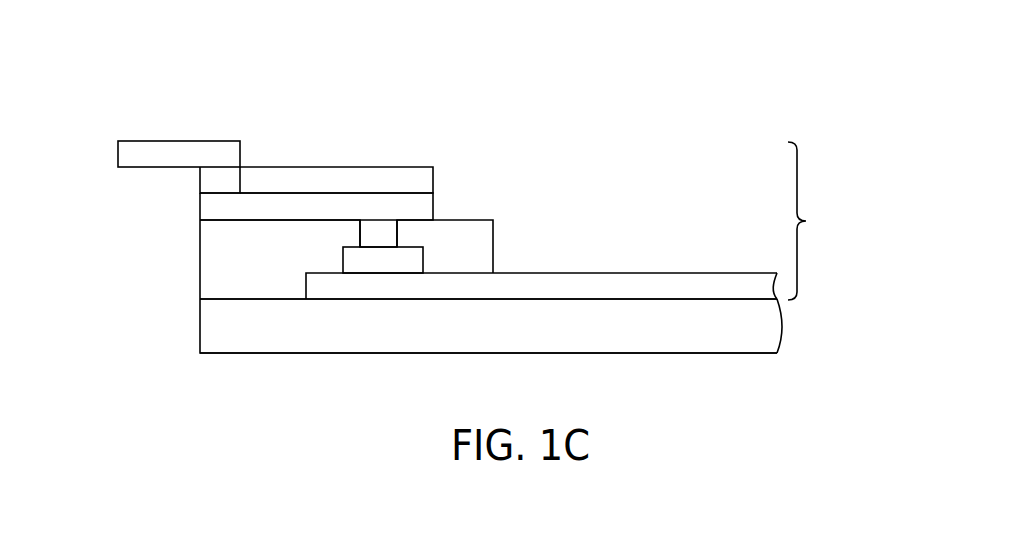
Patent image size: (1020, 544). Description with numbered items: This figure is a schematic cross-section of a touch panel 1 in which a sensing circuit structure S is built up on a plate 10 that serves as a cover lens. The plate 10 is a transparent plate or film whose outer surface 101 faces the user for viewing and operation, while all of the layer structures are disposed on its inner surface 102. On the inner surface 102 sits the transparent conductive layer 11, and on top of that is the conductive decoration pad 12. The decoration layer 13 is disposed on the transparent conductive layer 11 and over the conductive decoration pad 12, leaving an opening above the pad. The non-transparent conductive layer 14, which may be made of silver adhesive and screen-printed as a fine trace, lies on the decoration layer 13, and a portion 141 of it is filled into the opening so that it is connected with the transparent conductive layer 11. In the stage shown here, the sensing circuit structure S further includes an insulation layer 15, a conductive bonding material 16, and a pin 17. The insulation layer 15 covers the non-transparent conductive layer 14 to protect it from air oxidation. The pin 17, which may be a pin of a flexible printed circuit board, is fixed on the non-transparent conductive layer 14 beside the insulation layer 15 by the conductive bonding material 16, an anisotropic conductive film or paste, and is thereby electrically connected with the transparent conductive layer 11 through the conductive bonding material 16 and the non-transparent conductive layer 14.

The touch panel 1 is at (150, 71).
The plate 10 is at (216, 335).
The outer surface 101 is at (213, 354).
The inner surface 102 is at (215, 298).
The transparent conductive layer 11 is at (684, 284).
The conductive decoration pad 12 is at (372, 263).
The decoration layer 13 is at (216, 245).
The non-transparent conductive layer 14 is at (424, 207).
The portion of the non-transparent conductive layer 141 is at (378, 237).
The insulation layer 15 is at (410, 178).
The conductive bonding material 16 is at (212, 181).
The pin 17 is at (188, 148).
The sensing circuit structure S is at (806, 221).